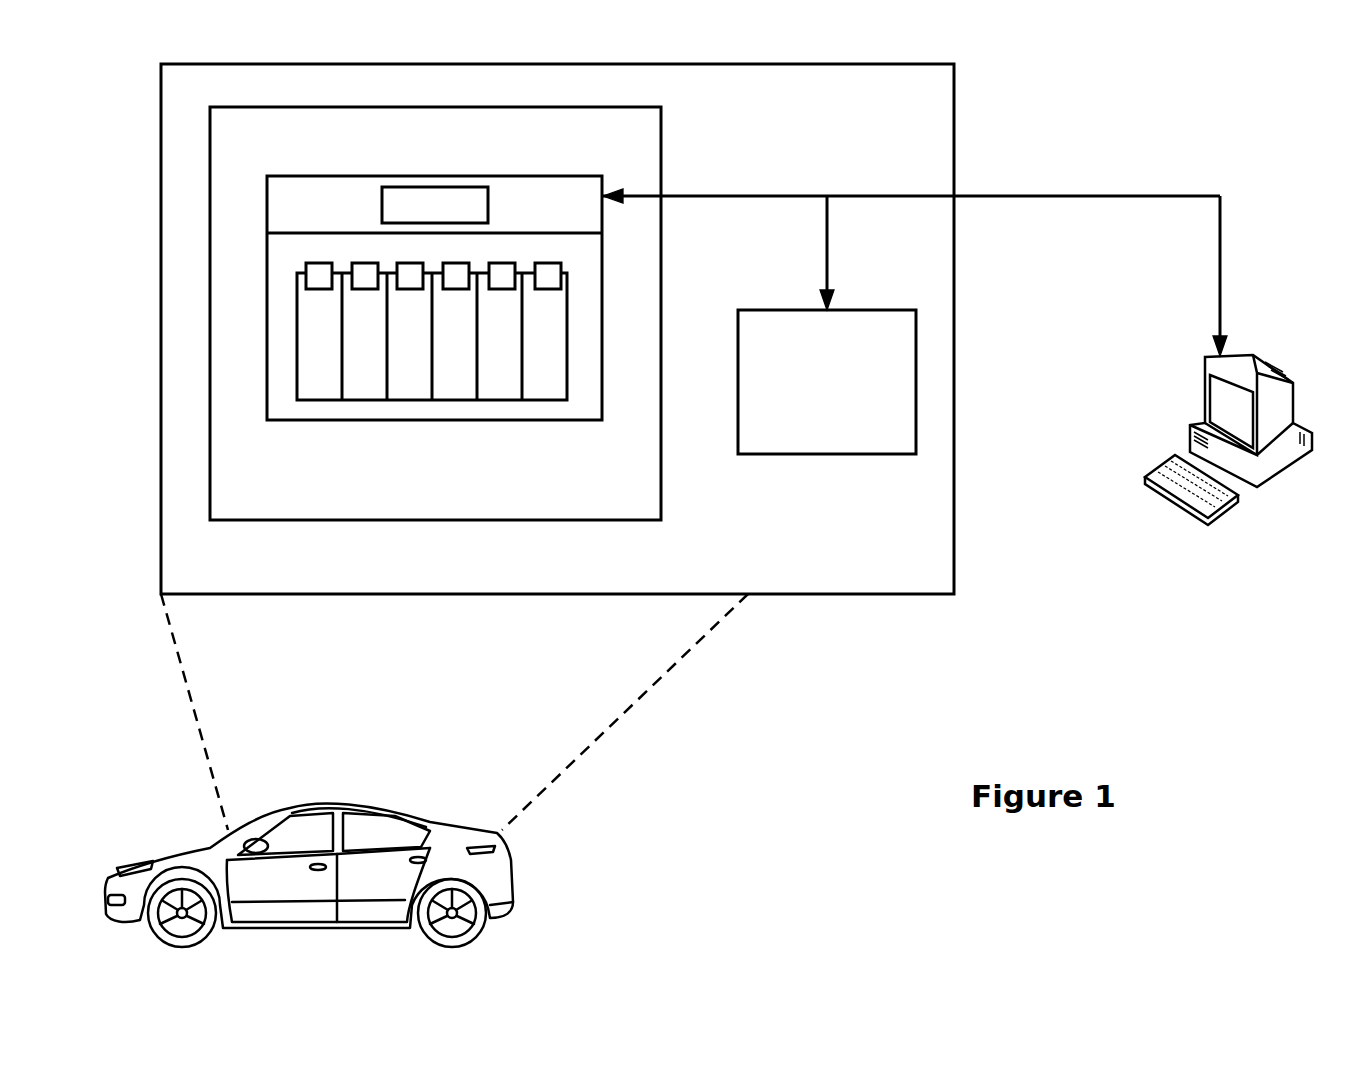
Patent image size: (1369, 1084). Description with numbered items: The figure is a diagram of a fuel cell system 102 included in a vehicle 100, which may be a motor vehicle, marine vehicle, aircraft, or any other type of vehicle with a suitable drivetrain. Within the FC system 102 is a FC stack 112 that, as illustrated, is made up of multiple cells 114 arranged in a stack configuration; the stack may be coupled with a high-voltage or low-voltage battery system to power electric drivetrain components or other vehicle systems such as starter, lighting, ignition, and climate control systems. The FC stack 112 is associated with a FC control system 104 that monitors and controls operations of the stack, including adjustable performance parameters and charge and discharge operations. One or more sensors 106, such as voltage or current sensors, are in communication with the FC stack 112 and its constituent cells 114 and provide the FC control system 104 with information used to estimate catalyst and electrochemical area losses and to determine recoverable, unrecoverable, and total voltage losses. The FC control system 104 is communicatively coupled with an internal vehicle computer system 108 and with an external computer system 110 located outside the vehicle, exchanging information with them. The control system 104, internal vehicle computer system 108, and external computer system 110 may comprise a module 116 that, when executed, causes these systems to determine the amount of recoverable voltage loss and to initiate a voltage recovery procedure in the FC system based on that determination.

The vehicle 100 is at (192, 843).
The FC system 102 is at (257, 137).
The FC control system 104 is at (596, 204).
The sensors 106 is at (398, 263).
The internal vehicle computer system 108 is at (844, 392).
The external computer system 110 is at (1176, 506).
The FC stack 112 is at (596, 261).
The cells 114 is at (406, 384).
The module 116 is at (452, 217).